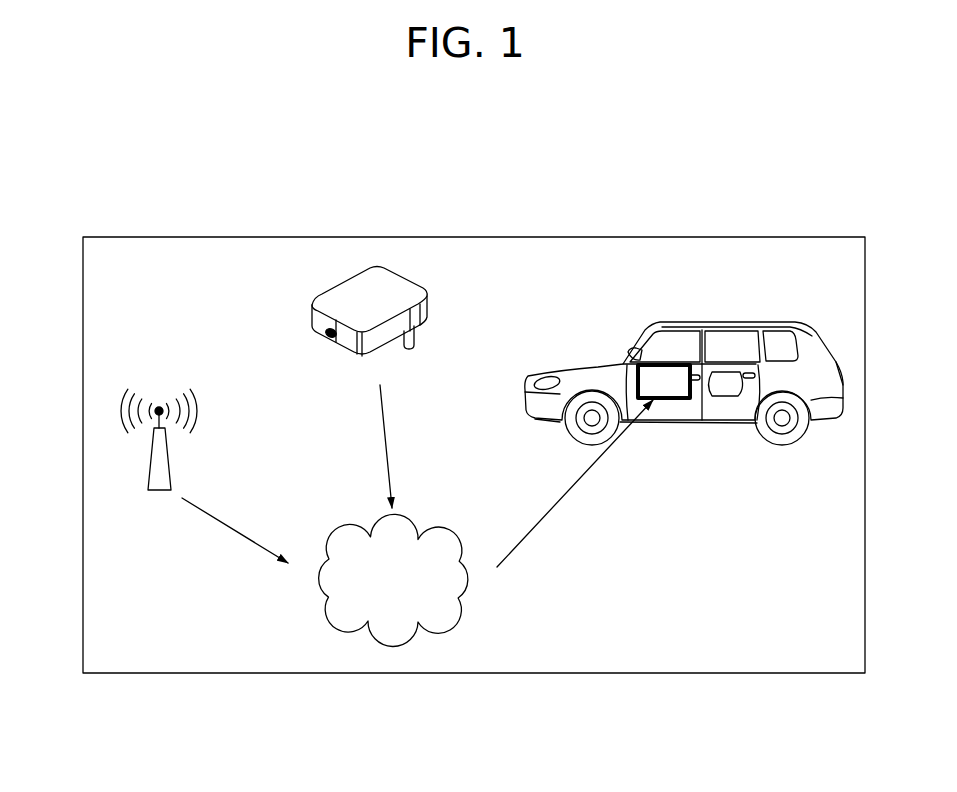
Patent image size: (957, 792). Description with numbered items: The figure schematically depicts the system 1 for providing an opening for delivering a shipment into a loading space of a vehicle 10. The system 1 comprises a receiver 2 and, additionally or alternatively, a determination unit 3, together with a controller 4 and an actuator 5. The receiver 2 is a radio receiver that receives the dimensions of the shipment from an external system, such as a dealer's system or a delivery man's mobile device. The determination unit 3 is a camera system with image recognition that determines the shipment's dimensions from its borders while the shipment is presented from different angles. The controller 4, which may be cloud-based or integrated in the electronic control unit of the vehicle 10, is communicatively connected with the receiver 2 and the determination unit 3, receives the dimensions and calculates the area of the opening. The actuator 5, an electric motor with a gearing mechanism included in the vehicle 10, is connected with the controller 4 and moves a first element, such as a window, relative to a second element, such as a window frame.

The system 1 is at (573, 237).
The receiver 2 is at (141, 463).
The determination unit 3 is at (342, 295).
The controller 4 is at (378, 648).
The actuator 5 is at (676, 380).
The vehicle 10 is at (776, 355).